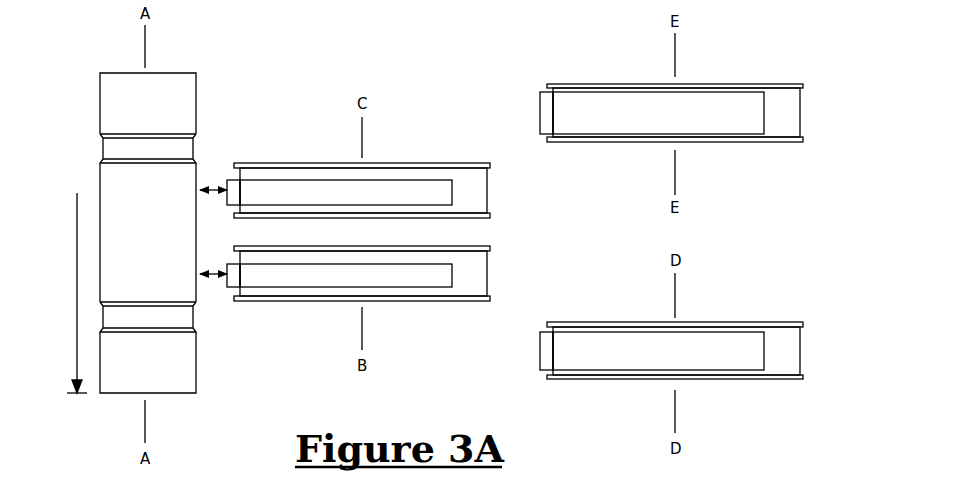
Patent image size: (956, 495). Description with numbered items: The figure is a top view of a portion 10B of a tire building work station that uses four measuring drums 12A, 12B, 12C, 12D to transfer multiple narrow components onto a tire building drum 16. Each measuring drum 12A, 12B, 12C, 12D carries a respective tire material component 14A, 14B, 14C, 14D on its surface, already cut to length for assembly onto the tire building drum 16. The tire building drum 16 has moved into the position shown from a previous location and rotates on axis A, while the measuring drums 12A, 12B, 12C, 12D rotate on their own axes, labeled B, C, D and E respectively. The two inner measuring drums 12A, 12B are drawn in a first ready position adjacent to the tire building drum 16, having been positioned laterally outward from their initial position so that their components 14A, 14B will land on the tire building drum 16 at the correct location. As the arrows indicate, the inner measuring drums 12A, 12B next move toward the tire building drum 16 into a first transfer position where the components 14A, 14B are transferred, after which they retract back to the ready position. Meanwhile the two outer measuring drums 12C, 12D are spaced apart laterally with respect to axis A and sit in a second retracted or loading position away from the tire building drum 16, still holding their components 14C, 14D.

The portion of a tire building work station 10B is at (336, 56).
The tire building drum 16 is at (100, 98).
The measuring drum 12A is at (487, 275).
The measuring drum 12B is at (487, 188).
The measuring drum 12C is at (800, 352).
The measuring drum 12D is at (800, 112).
The tire material component 14A is at (228, 288).
The tire material component 14B is at (228, 180).
The tire material component 14C is at (540, 362).
The tire material component 14D is at (540, 104).